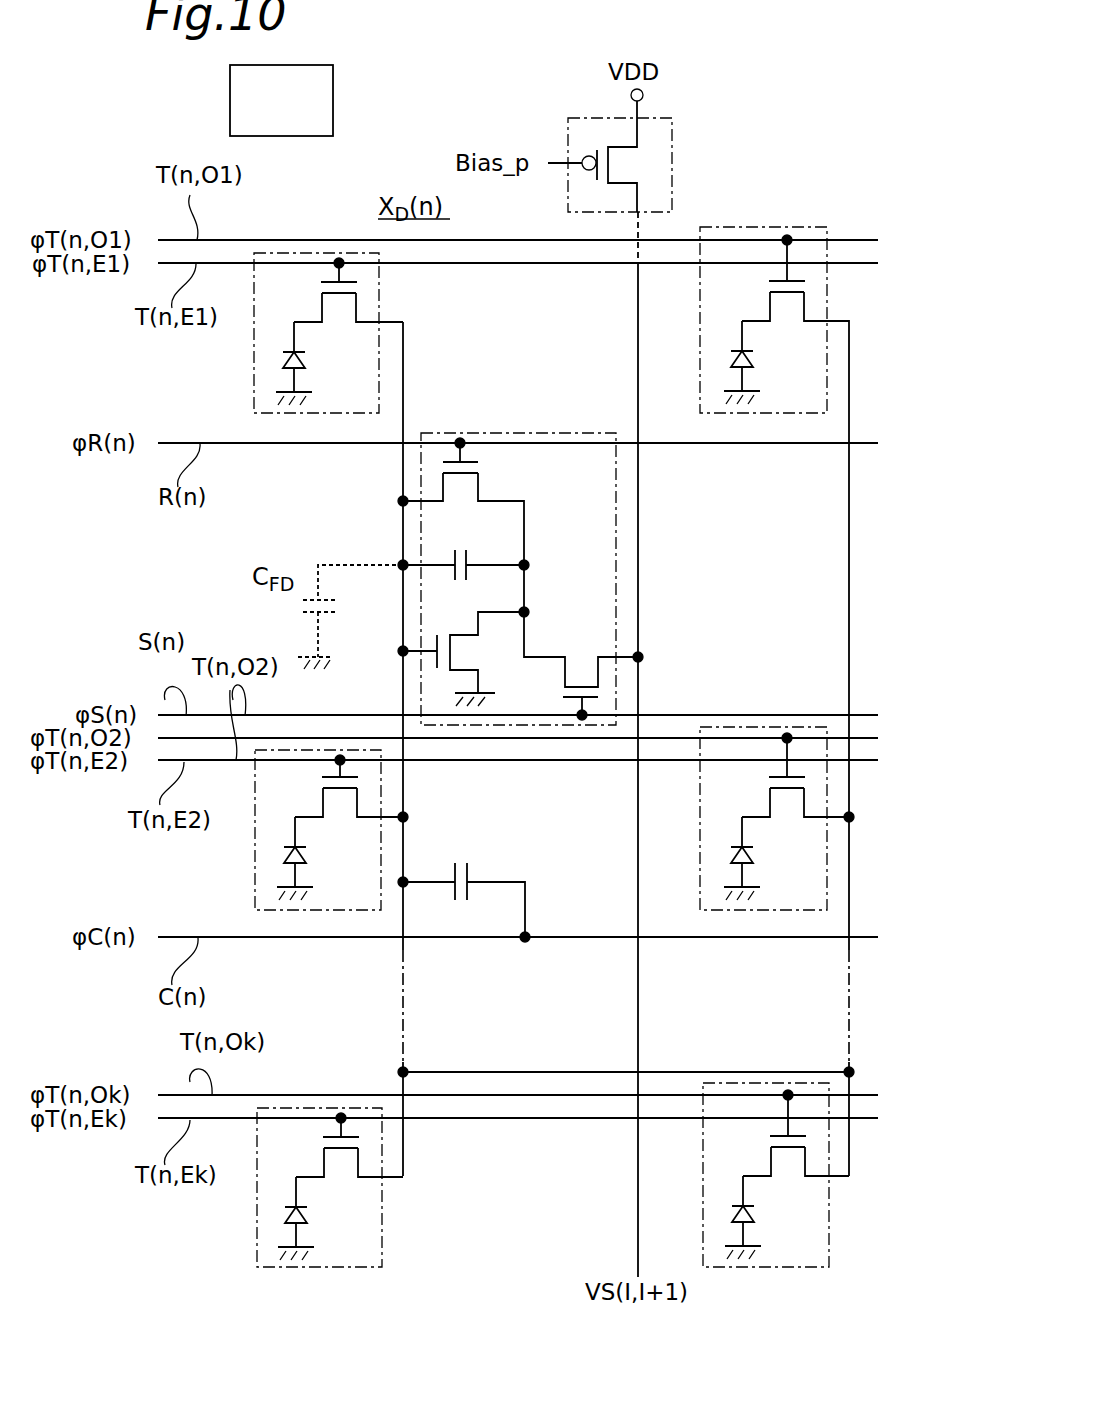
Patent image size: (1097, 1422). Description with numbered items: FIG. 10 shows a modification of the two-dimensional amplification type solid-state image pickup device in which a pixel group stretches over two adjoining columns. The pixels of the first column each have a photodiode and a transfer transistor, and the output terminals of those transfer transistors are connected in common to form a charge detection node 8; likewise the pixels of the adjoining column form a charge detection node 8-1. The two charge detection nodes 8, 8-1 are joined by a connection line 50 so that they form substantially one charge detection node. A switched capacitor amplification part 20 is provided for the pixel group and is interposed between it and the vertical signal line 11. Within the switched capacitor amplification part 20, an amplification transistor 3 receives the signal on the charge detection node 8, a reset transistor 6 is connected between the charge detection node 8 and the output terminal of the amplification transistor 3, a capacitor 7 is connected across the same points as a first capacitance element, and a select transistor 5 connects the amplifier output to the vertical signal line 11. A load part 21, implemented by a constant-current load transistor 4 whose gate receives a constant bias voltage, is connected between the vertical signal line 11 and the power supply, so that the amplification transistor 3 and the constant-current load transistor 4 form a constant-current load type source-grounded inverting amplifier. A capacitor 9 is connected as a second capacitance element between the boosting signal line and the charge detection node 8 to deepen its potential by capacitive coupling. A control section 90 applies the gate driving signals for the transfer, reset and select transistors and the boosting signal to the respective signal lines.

The amplification transistor 3 is at (455, 650).
The constant-current load transistor 4 is at (612, 160).
The select transistor 5 is at (583, 694).
The reset transistor 6 is at (460, 476).
The capacitor 7 is at (470, 553).
The charge detection node 8 is at (401, 692).
The charge detection node 8-1 is at (848, 680).
The capacitor 9 is at (470, 868).
The vertical signal line 11 is at (640, 522).
The switched capacitor amplification part 20 is at (544, 432).
The load part 21 is at (646, 150).
The connection line 50 is at (510, 1073).
The control section 90 is at (336, 100).